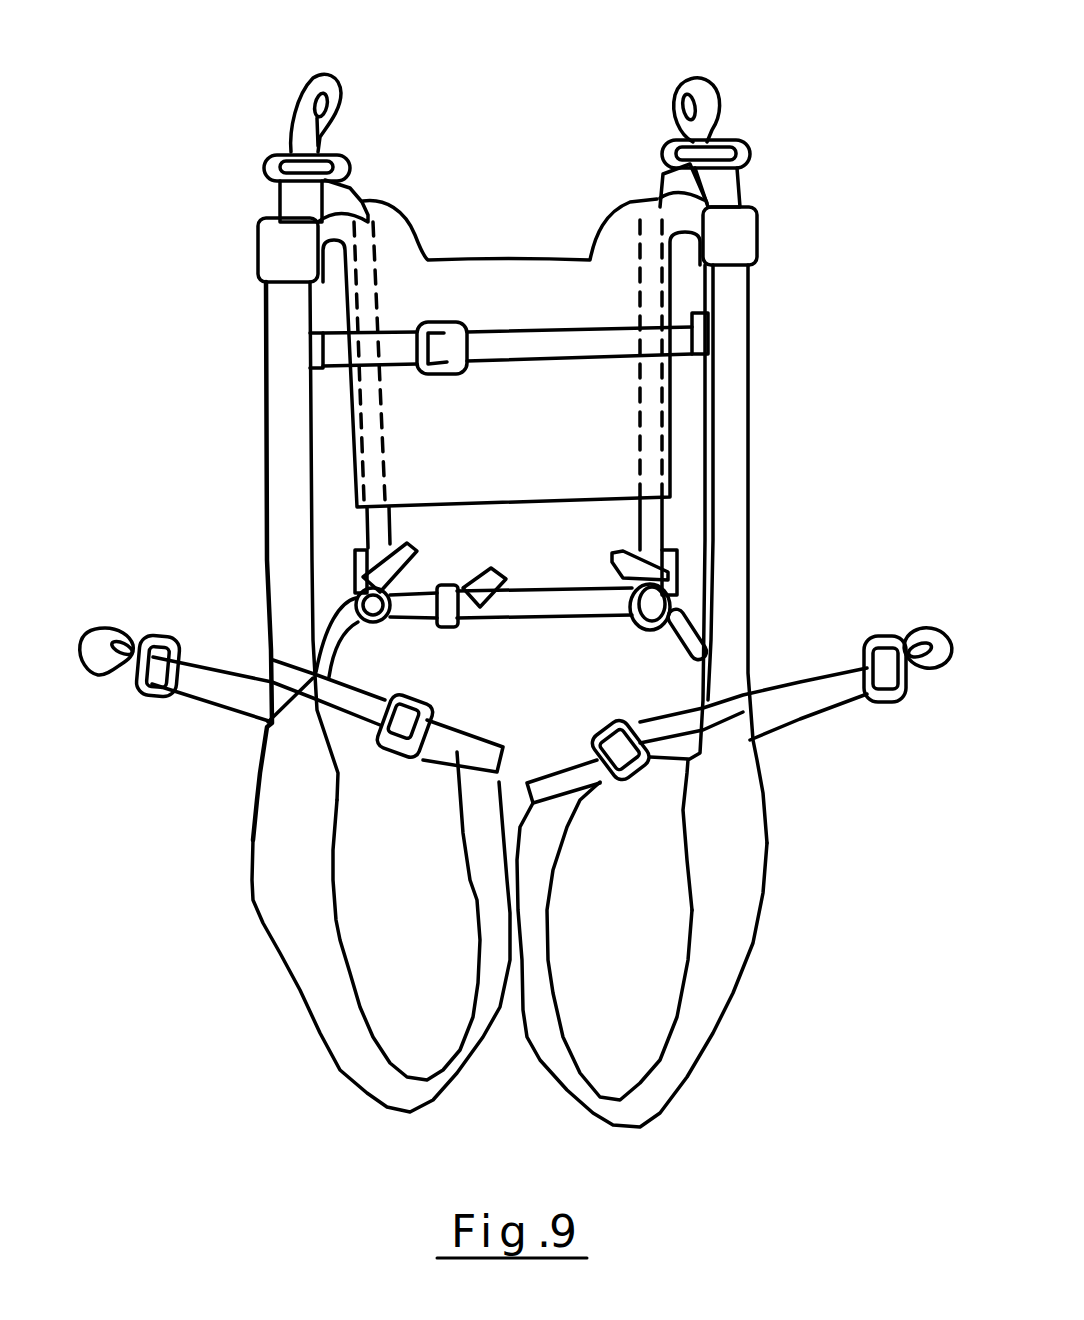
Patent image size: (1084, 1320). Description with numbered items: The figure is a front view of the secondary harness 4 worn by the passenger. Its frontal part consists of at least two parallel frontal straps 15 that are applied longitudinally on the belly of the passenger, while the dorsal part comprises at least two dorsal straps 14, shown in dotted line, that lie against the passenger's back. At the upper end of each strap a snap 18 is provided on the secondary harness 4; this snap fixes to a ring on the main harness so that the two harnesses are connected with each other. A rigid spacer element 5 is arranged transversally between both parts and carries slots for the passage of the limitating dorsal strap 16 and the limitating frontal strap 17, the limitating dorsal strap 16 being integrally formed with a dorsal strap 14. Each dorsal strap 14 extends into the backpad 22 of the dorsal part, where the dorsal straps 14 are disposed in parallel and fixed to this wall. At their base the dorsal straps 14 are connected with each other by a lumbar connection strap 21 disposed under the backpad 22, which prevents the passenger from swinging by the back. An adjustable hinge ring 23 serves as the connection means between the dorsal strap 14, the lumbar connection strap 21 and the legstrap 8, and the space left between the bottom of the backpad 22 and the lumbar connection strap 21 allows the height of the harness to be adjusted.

The secondary harness 4 is at (293, 655).
The spacer element 5 is at (740, 197).
The legstrap 8 is at (730, 931).
The dorsal strap 14 is at (357, 449).
The frontal strap 15 is at (758, 263).
The limitating dorsal strap 16 is at (363, 199).
The limitating frontal strap 17 is at (281, 200).
The snap 18 is at (697, 77).
The lumbar connection strap 21 is at (540, 595).
The backpad 22 is at (483, 412).
The adjustable hinge ring 23 is at (652, 632).